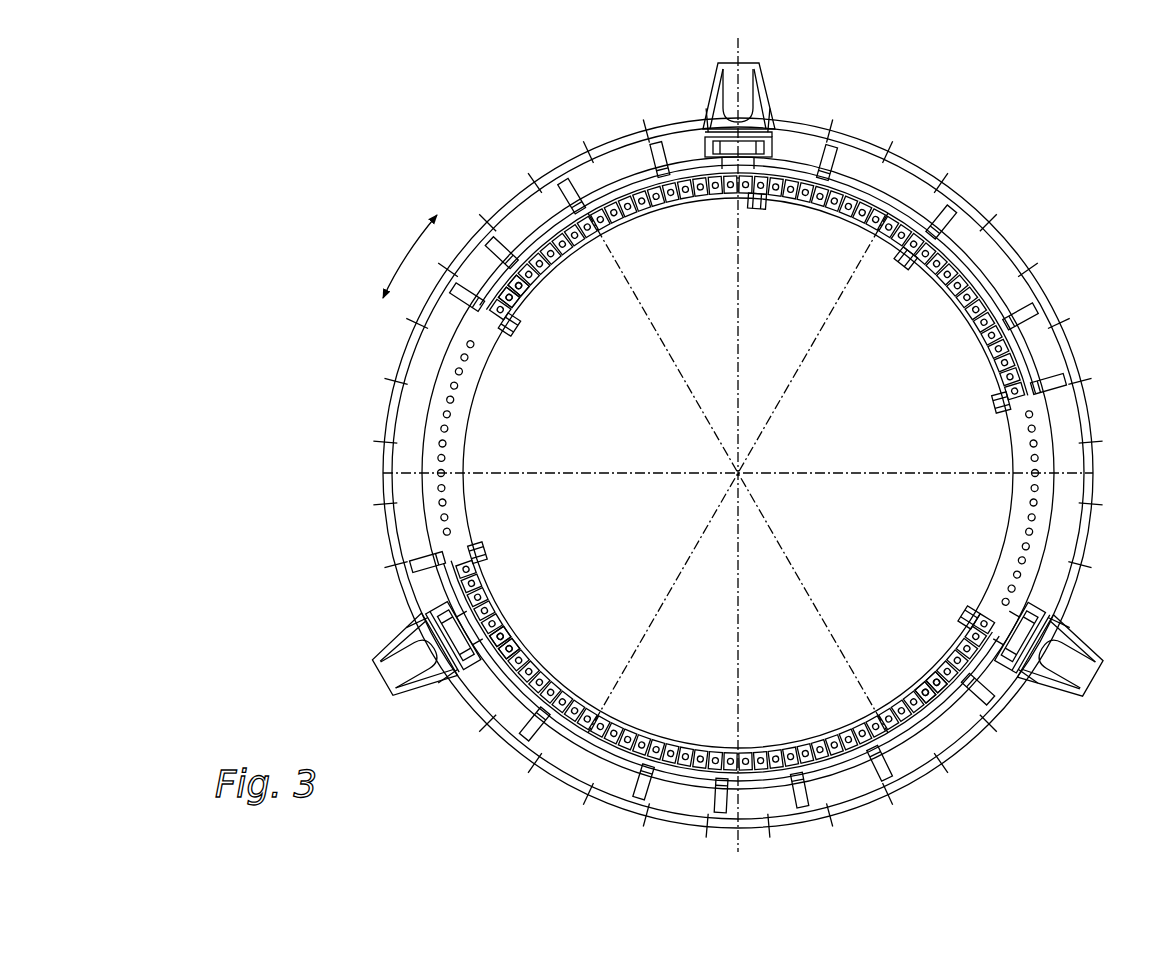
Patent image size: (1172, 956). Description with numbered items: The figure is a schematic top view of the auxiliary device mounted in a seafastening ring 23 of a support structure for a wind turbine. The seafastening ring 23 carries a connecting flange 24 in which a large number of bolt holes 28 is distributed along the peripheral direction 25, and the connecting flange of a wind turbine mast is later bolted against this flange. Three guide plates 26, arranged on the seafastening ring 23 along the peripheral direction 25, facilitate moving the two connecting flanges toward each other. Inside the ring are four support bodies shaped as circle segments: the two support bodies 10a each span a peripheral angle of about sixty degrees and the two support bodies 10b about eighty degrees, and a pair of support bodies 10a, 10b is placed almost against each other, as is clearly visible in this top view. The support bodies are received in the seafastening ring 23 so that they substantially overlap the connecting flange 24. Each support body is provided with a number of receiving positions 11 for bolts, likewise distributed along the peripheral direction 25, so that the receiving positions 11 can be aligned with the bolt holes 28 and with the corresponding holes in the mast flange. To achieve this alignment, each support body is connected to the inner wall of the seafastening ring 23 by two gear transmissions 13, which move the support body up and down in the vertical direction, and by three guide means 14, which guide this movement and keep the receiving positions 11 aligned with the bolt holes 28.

The support body 10a is at (620, 176).
The support body 10b is at (987, 268).
The receiving position 11 is at (538, 262).
The gear transmission 13 is at (846, 148).
The guide means 14 is at (755, 200).
The seafastening ring 23 is at (380, 420).
The connecting flange 24 is at (485, 575).
The peripheral direction 25 is at (405, 258).
The guide plate 26 is at (748, 90).
The bolt hole 28 is at (1015, 503).